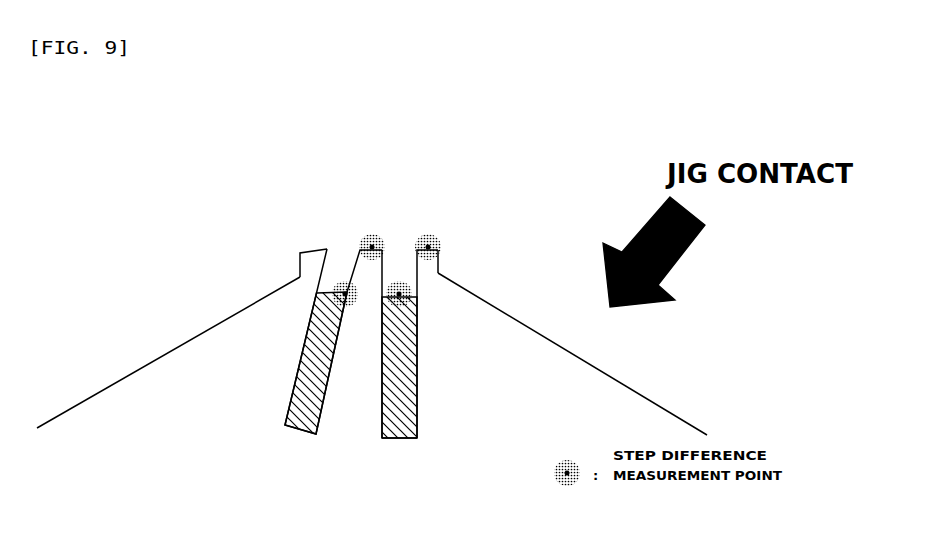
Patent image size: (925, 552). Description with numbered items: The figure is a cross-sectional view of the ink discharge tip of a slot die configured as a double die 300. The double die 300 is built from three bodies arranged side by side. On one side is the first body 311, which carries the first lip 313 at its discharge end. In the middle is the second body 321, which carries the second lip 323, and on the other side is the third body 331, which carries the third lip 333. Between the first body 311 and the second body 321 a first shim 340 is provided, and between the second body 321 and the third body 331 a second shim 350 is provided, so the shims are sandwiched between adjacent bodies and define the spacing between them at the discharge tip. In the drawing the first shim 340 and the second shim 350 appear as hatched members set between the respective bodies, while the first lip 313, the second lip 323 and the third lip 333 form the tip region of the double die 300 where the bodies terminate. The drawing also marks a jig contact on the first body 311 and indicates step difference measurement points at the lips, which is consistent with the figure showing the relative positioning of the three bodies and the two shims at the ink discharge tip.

The double die 300 is at (112, 137).
The first body 311 is at (578, 390).
The first lip 313 is at (427, 268).
The second body 321 is at (357, 380).
The second lip 323 is at (368, 268).
The third body 331 is at (133, 412).
The third lip 333 is at (315, 262).
The first shim 340 is at (403, 370).
The second shim 350 is at (310, 358).